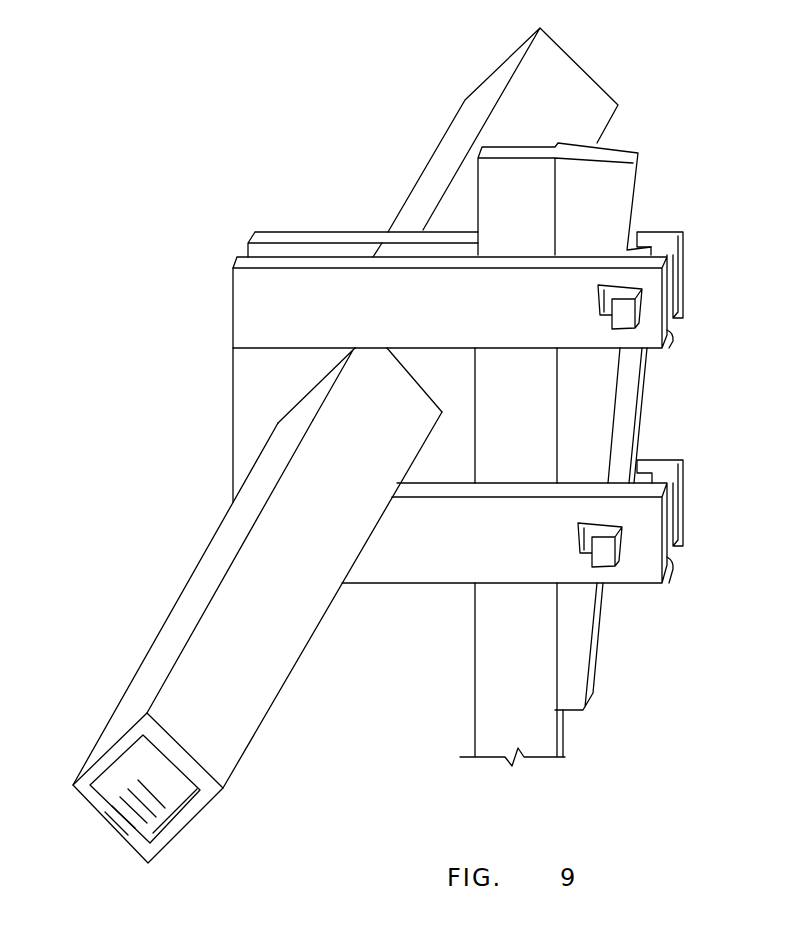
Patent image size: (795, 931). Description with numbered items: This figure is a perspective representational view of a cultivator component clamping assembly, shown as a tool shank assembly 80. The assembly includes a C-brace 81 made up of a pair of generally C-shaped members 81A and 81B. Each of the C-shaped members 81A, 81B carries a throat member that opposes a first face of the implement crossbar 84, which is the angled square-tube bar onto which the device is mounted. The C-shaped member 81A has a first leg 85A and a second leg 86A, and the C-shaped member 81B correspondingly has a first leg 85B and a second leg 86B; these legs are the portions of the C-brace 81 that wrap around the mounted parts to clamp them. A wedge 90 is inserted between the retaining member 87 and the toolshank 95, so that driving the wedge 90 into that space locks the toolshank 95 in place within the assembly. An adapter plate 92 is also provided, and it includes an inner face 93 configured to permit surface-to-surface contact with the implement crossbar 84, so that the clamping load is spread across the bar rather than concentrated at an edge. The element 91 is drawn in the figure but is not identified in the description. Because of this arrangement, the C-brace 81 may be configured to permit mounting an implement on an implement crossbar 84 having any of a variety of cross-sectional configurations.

The tool shank assembly 80 is at (264, 182).
The C-brace 81 is at (210, 310).
The C-shaped member 81A is at (285, 232).
The C-shaped member 81B is at (233, 383).
The implement crossbar 84 is at (283, 668).
The first leg 85A is at (684, 267).
The first leg 85B is at (676, 331).
The second leg 86A is at (688, 493).
The second leg 86B is at (673, 563).
The retaining member 87 is at (640, 423).
The wedge 90 is at (625, 182).
The vertical mounting plate 91 is at (607, 440).
The adapter plate 92 is at (447, 457).
The inner face 93 is at (405, 375).
The toolshank 95 is at (547, 735).